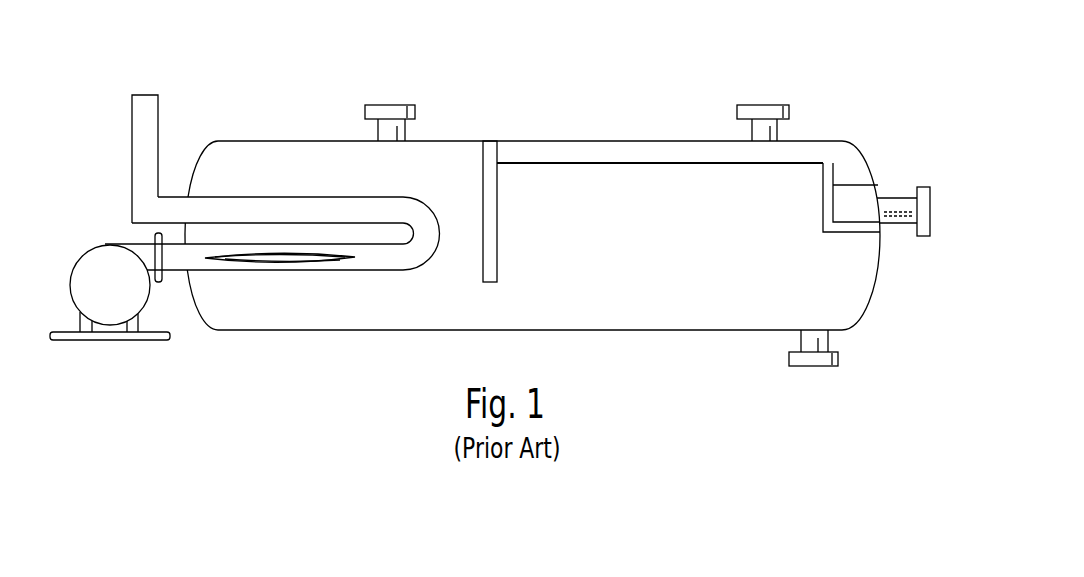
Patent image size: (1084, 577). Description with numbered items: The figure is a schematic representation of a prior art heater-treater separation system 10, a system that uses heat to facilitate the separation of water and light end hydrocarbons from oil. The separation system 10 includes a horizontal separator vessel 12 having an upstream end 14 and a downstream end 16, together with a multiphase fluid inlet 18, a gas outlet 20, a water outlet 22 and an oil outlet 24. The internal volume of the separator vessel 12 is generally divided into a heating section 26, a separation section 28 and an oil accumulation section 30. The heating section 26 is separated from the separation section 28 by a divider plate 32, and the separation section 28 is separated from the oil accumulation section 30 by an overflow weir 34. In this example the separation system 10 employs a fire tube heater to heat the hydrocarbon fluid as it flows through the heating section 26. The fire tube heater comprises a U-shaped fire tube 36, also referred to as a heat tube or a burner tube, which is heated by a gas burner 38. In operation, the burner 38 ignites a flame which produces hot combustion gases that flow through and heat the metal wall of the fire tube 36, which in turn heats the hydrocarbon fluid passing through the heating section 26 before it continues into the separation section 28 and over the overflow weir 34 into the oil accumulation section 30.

The separation system 10 is at (544, 199).
The horizontal separator vessel 12 is at (537, 140).
The upstream end 14 is at (216, 140).
The downstream end 16 is at (877, 270).
The multiphase fluid inlet 18 is at (415, 113).
The gas outlet 20 is at (789, 115).
The water outlet 22 is at (790, 356).
The oil outlet 24 is at (926, 238).
The heating section 26 is at (372, 307).
The separation section 28 is at (693, 305).
The oil accumulation section 30 is at (858, 175).
The divider plate 32 is at (497, 152).
The overflow weir 34 is at (853, 163).
The U-shaped fire tube 36 is at (283, 266).
The gas burner 38 is at (93, 247).